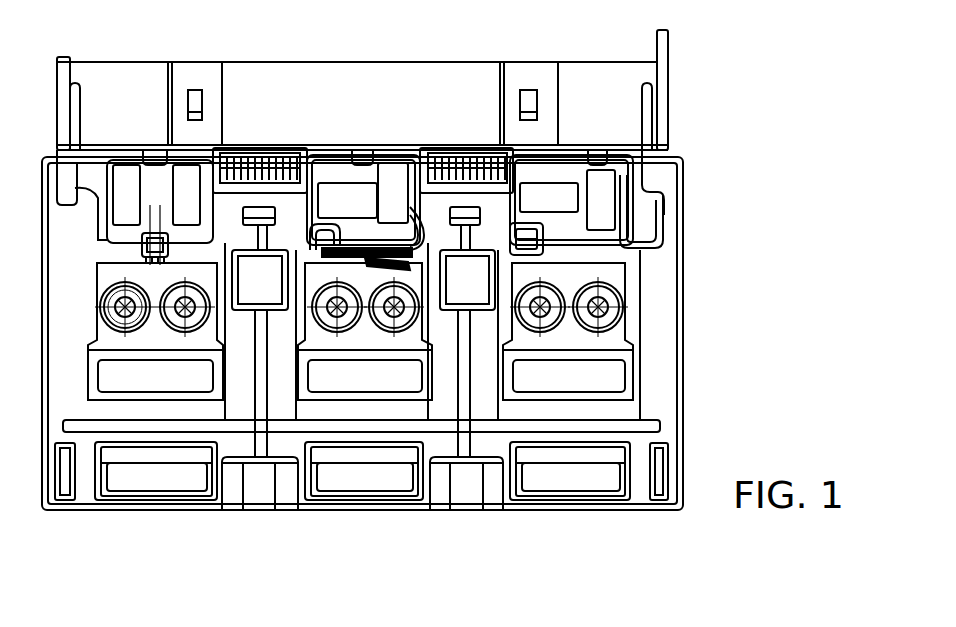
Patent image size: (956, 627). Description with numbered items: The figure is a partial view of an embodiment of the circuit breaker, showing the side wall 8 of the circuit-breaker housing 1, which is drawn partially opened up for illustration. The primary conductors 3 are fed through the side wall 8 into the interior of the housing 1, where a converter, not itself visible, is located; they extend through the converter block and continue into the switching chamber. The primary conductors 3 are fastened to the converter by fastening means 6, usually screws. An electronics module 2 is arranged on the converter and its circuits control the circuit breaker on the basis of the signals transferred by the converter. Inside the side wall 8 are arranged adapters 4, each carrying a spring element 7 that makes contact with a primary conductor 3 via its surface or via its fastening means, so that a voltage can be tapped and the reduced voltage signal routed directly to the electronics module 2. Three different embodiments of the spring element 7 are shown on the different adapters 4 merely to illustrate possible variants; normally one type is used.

The circuit-breaker housing 1 is at (688, 226).
The electronics module 2 is at (476, 87).
The primary conductor 3 is at (600, 353).
The adapter 4 is at (135, 182).
The fastening means 6 is at (137, 318).
The spring element 7 is at (148, 240).
The side wall 8 is at (652, 222).